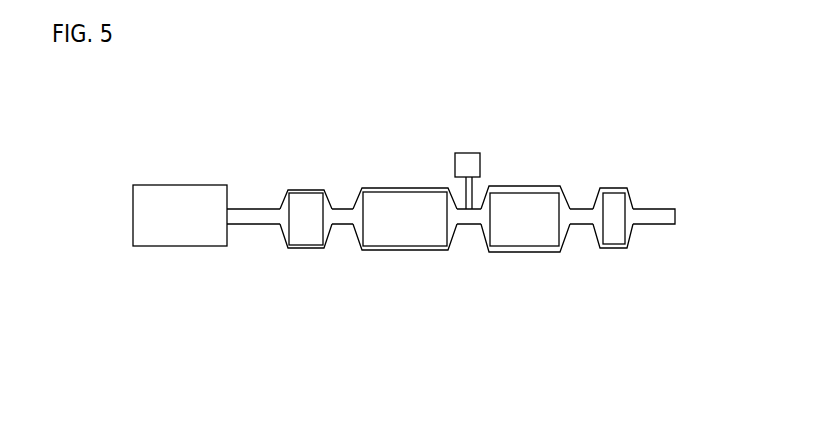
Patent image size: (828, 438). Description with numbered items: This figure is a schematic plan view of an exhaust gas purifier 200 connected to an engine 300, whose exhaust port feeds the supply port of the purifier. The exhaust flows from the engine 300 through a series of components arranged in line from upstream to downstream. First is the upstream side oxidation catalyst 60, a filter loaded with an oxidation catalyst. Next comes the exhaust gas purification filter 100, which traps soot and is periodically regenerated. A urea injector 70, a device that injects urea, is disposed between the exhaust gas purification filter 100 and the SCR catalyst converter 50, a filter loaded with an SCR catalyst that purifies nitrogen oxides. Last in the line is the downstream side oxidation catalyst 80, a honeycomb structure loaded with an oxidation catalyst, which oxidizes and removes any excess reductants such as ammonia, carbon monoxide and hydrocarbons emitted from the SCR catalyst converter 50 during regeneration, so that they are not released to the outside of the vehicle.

The engine 300 is at (179, 205).
The upstream side oxidation catalyst 60 is at (304, 208).
The exhaust gas purification filter 100 is at (407, 205).
The urea injector 70 is at (467, 152).
The SCR catalyst converter 50 is at (530, 205).
The downstream side oxidation catalyst 80 is at (615, 208).
The exhaust gas purifier 200 is at (615, 146).